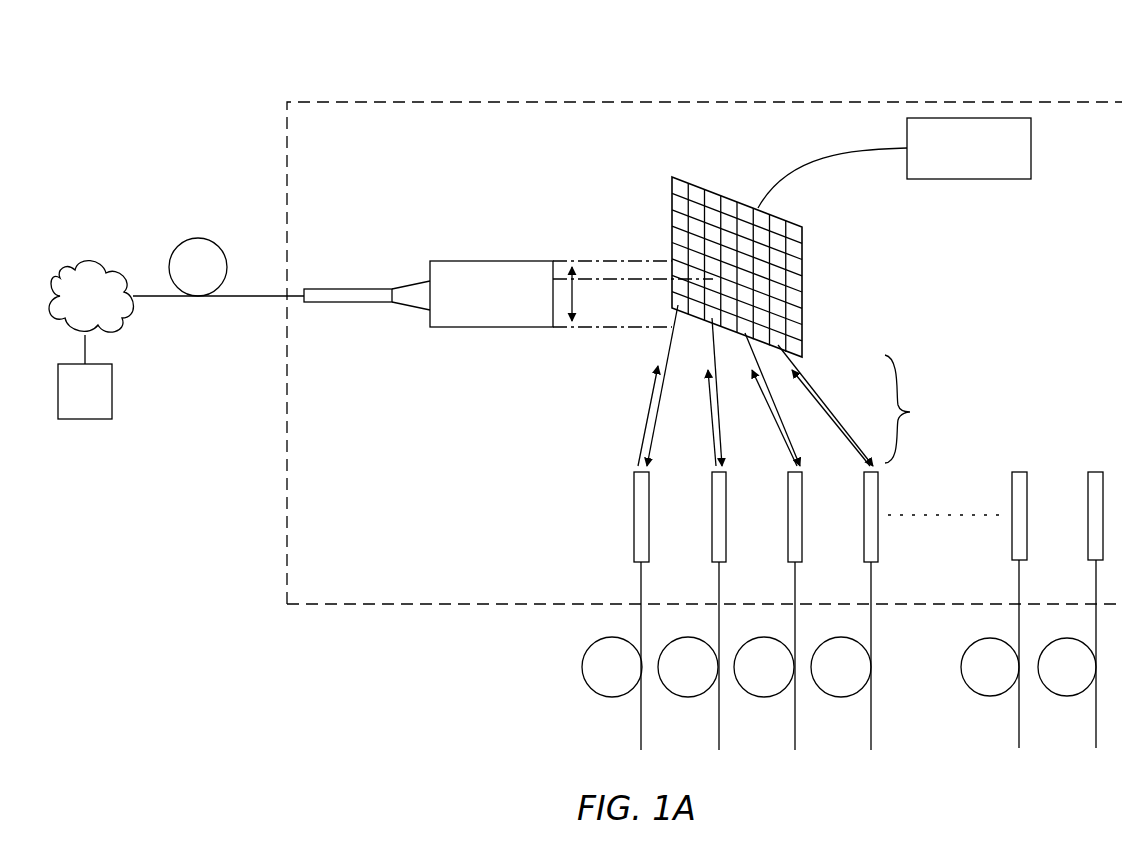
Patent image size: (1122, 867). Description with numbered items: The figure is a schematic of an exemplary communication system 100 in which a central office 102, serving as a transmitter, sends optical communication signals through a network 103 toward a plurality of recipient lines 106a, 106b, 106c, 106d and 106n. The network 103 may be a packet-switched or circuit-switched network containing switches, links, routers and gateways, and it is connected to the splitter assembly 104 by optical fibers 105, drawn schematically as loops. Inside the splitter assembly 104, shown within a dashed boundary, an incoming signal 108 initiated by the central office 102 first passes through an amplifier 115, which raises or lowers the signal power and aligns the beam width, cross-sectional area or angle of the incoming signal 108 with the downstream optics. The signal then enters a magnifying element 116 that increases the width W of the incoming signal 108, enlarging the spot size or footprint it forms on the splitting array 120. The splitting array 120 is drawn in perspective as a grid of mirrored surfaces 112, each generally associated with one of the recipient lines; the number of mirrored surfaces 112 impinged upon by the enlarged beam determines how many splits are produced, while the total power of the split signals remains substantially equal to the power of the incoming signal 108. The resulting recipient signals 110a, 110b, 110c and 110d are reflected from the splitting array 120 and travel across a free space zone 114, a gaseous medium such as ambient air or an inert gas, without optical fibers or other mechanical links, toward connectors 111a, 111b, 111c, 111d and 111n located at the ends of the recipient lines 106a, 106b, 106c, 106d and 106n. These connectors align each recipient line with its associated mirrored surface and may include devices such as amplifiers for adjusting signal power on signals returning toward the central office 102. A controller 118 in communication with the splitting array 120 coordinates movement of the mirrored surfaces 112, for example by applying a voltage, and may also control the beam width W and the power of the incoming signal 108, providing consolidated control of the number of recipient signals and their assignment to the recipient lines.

The communication system 100 is at (228, 84).
The central office 102 is at (85, 391).
The network 103 is at (91, 312).
The splitter assembly 104 is at (340, 100).
The optical fibers 105 is at (190, 240).
The incoming signal 108 is at (607, 293).
The recipient signal 110a is at (646, 414).
The recipient signal 110b is at (708, 414).
The recipient signal 110c is at (772, 412).
The recipient signal 110d is at (858, 440).
The connector 111a is at (634, 540).
The connector 111b is at (712, 530).
The connector 111c is at (788, 530).
The connector 111d is at (864, 532).
The connector 111n is at (1088, 530).
The mirrored surfaces 112 is at (683, 208).
The free space zone 114 is at (917, 409).
The amplifier 115 is at (344, 305).
The magnifying element 116 is at (491, 294).
The controller 118 is at (894, 163).
The splitting array 120 is at (812, 267).
The recipient line 106a is at (640, 726).
The recipient line 106b is at (718, 718).
The recipient line 106c is at (794, 718).
The recipient line 106d is at (870, 718).
The recipient line 106n is at (1095, 718).